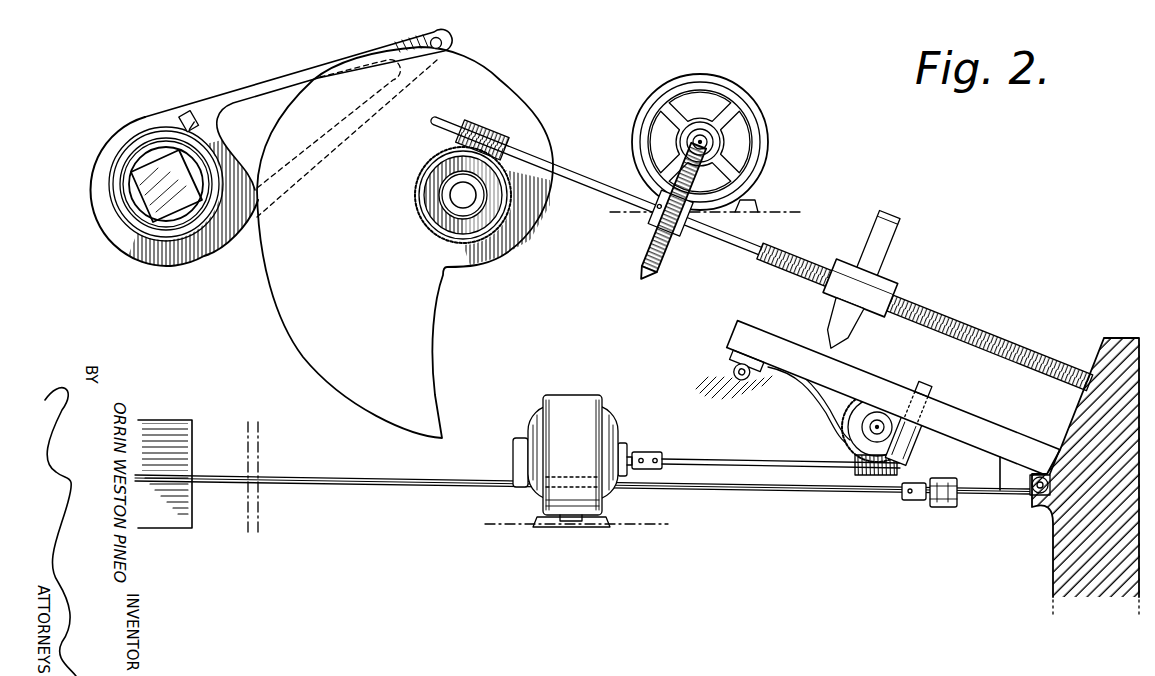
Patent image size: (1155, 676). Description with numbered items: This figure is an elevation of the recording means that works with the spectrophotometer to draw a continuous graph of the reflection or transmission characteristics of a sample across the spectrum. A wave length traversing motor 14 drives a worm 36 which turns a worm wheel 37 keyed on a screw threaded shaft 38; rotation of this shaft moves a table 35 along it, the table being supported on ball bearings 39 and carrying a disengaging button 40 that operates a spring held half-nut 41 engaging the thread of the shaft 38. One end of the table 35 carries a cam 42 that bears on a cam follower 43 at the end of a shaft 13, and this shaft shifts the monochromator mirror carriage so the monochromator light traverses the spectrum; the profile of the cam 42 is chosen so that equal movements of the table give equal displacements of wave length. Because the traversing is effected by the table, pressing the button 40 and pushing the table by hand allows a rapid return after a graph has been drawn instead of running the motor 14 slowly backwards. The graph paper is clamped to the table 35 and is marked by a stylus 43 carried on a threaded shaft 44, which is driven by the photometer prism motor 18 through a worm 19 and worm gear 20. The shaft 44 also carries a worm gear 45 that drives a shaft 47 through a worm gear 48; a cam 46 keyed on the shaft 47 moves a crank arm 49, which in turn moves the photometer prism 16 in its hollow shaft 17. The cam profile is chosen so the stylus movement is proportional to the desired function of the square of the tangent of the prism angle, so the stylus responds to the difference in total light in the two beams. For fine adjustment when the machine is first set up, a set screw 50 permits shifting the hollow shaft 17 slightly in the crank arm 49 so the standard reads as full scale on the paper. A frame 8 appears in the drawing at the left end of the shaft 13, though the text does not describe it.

The frame 8 is at (180, 512).
The shaft 13 is at (362, 484).
The wave length traversing motor 14 is at (570, 525).
The photometer prism 16 is at (132, 172).
The hollow shaft 17 is at (152, 150).
The photometer prism motor 18 is at (757, 106).
The worm 19 is at (716, 141).
The worm gear 20 is at (658, 266).
The table 35 is at (758, 328).
The worm 36 is at (897, 463).
The worm wheel 37 is at (845, 418).
The screw threaded shaft 38 is at (869, 428).
The ball bearings 39 is at (735, 370).
The disengaging button 40 is at (935, 385).
The spring held half-nut 41 is at (895, 443).
The cam 42 is at (998, 500).
The stylus 43 is at (894, 233).
The threaded shaft 44 is at (944, 306).
The worm gear 45 is at (503, 136).
The cam 46 is at (500, 80).
The shaft 47 is at (453, 196).
The worm gear 48 is at (433, 228).
The crank arm 49 is at (442, 40).
The set screw 50 is at (190, 112).